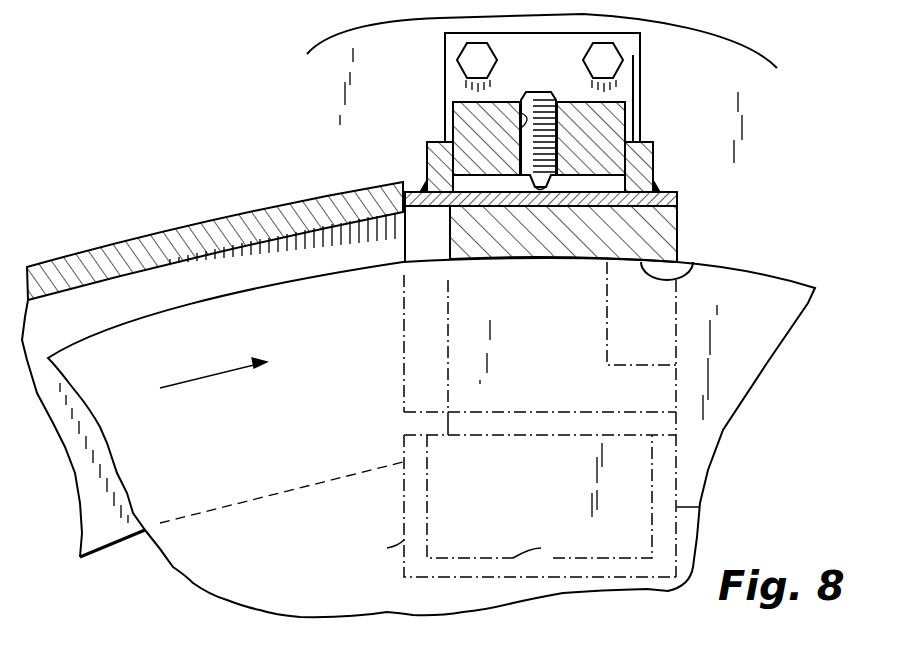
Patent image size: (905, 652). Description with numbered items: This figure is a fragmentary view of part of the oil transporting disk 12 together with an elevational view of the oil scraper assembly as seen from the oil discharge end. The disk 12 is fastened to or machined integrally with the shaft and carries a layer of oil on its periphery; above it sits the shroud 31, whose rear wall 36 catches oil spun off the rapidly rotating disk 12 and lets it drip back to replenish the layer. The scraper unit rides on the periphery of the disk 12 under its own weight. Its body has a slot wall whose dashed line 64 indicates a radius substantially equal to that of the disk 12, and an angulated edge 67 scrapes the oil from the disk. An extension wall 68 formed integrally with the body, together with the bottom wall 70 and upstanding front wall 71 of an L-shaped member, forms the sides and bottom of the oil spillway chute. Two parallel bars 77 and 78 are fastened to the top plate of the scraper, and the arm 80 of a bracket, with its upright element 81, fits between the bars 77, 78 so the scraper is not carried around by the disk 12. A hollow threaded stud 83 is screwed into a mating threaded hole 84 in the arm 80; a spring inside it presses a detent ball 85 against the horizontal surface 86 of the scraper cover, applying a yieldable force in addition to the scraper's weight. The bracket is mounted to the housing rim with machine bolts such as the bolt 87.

The oil transporting disk 12 is at (787, 280).
The shroud 31 is at (116, 232).
The rear wall 36 is at (240, 212).
The dashed line 64 is at (692, 263).
The edge 67 is at (660, 227).
The extension wall 68 is at (700, 507).
The bottom wall 70 is at (541, 548).
The front wall 71 is at (387, 548).
The bar 77 is at (640, 155).
The bar 78 is at (453, 148).
The arm 80 is at (612, 115).
The upright element 81 is at (643, 53).
The threaded stud 83 is at (556, 98).
The threaded hole 84 is at (521, 118).
The detent ball 85 is at (560, 182).
The horizontal surface 86 is at (490, 178).
The machine bolt 87 is at (600, 55).